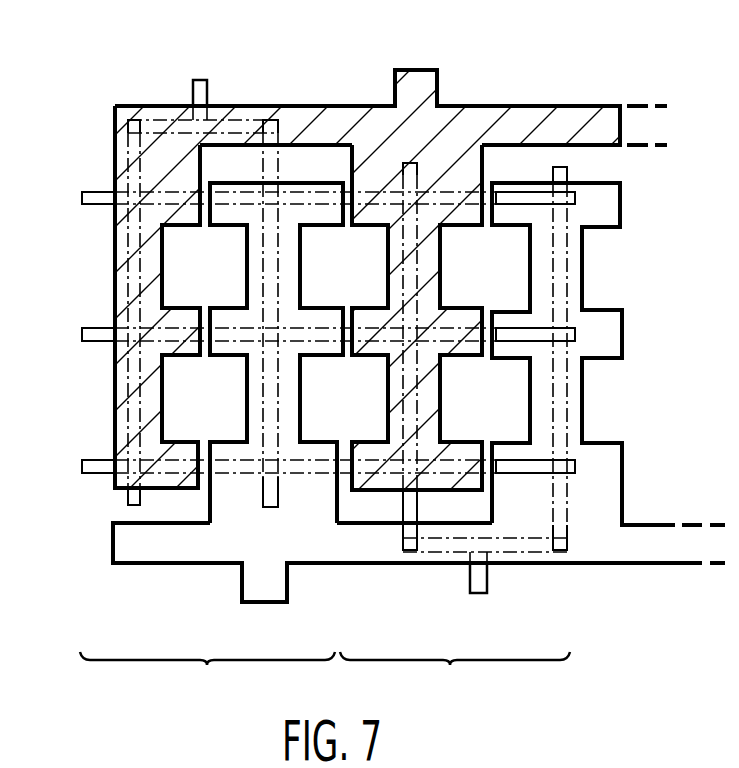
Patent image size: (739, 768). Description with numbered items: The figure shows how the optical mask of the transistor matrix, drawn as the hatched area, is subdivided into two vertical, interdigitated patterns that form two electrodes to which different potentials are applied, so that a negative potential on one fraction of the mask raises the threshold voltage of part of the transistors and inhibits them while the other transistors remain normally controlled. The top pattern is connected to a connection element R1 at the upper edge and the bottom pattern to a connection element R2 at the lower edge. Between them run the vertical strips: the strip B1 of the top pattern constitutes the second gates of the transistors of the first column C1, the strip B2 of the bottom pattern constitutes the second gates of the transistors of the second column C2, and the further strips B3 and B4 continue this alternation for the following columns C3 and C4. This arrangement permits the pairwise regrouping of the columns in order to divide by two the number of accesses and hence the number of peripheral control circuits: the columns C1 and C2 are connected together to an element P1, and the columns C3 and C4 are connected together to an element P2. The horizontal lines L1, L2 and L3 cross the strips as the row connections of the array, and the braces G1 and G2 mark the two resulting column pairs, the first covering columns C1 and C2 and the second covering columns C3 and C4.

The first column C1 is at (136, 119).
The second column C2 is at (267, 119).
The third column C3 is at (408, 567).
The fourth column C4 is at (553, 567).
The column interconnection element P1 is at (198, 79).
The column interconnection element P2 is at (480, 594).
The connection element of top pattern R1 is at (420, 72).
The connection element of bottom pattern R2 is at (255, 593).
The line L1 is at (84, 197).
The line L2 is at (90, 333).
The line L3 is at (88, 462).
The strip of top pattern B1 is at (122, 283).
The strip of bottom pattern B2 is at (301, 290).
The block B3 is at (441, 290).
The block B4 is at (583, 281).
The group G1 is at (207, 674).
The group G2 is at (455, 674).